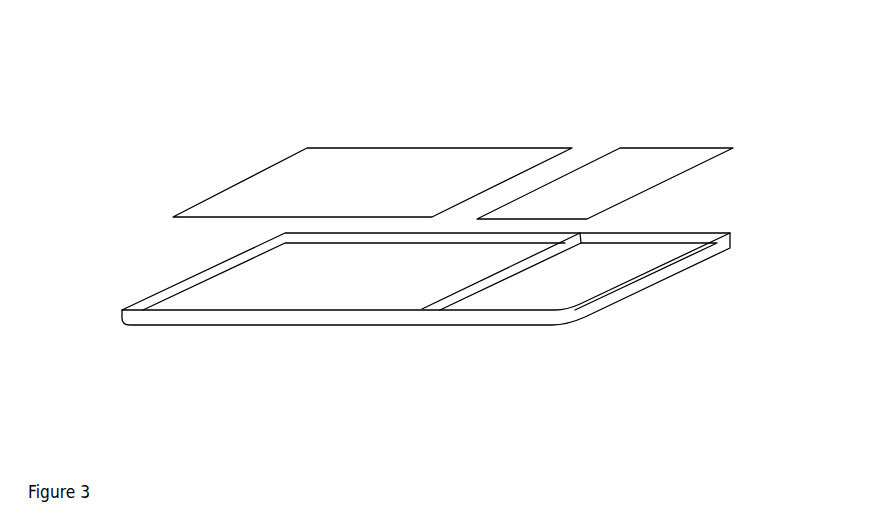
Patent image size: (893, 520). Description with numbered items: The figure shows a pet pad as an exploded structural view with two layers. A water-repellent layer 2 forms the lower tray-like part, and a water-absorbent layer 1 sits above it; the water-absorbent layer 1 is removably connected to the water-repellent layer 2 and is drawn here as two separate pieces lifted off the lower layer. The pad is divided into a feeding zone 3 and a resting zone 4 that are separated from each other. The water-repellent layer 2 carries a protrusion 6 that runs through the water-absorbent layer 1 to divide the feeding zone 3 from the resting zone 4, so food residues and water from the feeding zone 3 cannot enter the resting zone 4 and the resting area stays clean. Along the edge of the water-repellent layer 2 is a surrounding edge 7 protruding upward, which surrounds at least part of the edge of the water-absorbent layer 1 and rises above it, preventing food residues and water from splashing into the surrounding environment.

The water-absorbent layer 1 is at (300, 169).
The water-repellent layer 2 is at (243, 285).
The feeding zone 3 is at (642, 157).
The resting zone 4 is at (378, 155).
The protrusion 6 is at (520, 268).
The surrounding edge 7 is at (660, 273).